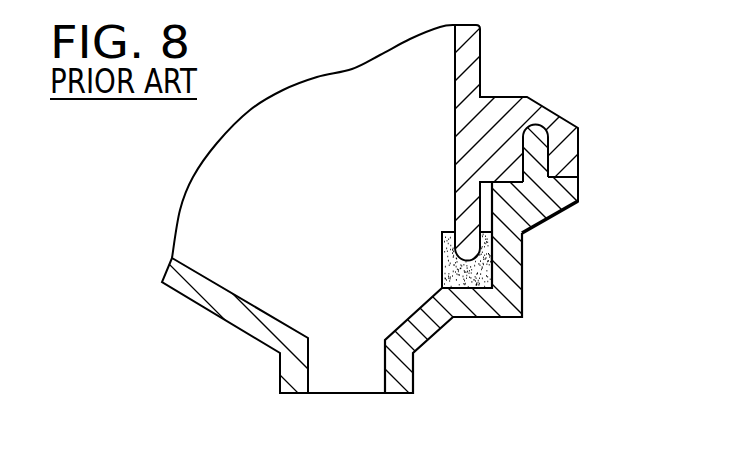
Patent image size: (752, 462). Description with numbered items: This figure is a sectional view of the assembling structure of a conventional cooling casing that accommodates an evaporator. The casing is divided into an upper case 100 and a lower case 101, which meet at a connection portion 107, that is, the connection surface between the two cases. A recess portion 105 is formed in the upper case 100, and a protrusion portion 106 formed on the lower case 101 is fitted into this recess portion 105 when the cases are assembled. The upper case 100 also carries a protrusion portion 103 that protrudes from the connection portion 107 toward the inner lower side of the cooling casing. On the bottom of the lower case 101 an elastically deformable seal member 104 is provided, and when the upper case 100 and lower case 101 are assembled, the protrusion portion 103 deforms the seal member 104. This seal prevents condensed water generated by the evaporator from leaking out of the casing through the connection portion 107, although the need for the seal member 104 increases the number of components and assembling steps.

The upper case 100 is at (481, 64).
The lower case 101 is at (487, 318).
The protrusion portion 103 is at (457, 207).
The seal member 104 is at (462, 262).
The recess portion 105 is at (552, 178).
The protrusion portion 106 is at (537, 148).
The connection portion 107 is at (578, 203).